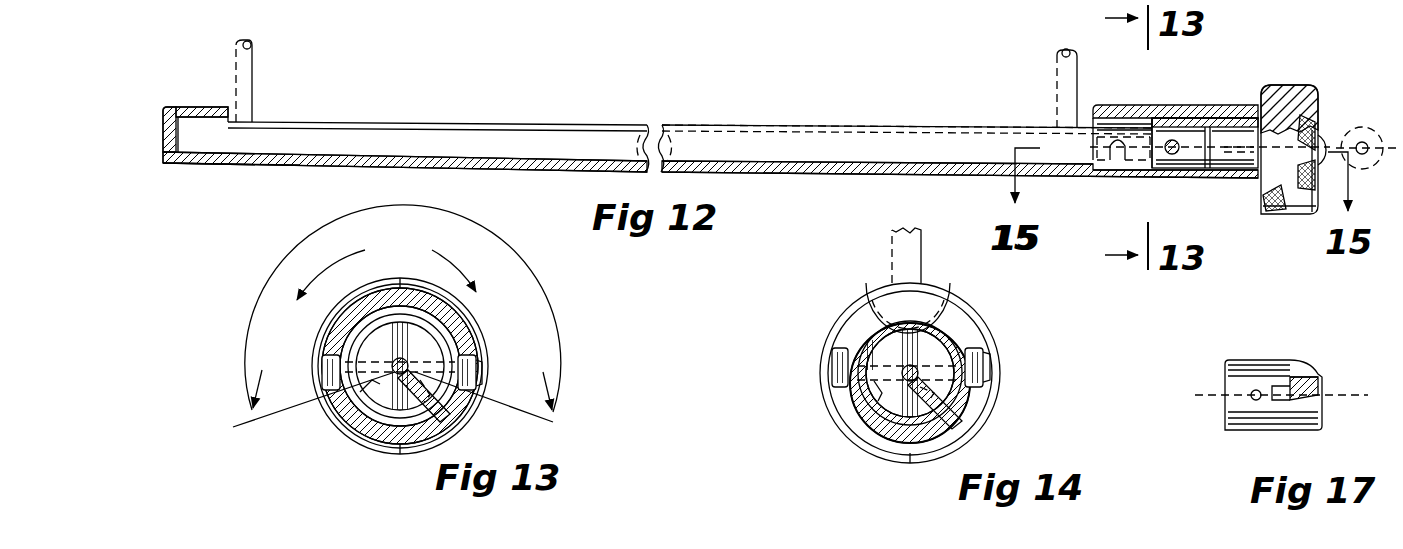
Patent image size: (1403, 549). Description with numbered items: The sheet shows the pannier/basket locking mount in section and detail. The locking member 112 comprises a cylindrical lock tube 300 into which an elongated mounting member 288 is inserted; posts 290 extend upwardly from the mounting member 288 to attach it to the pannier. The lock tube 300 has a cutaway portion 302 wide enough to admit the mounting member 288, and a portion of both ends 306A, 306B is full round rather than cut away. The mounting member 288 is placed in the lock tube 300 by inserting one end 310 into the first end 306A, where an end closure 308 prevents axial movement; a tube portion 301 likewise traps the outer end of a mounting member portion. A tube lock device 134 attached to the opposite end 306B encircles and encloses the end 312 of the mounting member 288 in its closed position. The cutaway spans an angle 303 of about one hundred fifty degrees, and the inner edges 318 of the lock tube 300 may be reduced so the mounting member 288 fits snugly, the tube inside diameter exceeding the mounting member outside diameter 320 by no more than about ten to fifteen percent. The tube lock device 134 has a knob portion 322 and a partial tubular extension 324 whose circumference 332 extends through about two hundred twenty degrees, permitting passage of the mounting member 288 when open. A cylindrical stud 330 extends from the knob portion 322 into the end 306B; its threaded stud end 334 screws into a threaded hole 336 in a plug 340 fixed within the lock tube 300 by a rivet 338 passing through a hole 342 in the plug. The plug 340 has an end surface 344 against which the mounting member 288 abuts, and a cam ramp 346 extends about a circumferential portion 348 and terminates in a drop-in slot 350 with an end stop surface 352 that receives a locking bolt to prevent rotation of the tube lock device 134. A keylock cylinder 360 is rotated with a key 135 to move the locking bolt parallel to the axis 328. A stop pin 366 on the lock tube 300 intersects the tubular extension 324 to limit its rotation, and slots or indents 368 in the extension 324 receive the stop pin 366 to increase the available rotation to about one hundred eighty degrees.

In FIG. 12, the locking member 112 is at (650, 100).
In FIG. 13, the locking member 112 is at (248, 296).
In FIG. 14, the locking member 112 is at (975, 298).
In FIG. 12, the tube lock device 134 is at (1280, 83).
In FIG. 13, the tube lock device 134 is at (502, 298).
In FIG. 14, the tube lock device 134 is at (836, 305).
In FIG. 12, the key 135 is at (1357, 126).
In FIG. 12, the mounting member 288 is at (548, 125).
In FIG. 14, the mounting member 288 is at (876, 286).
In FIG. 12, the posts 290 is at (253, 60).
In FIG. 14, the posts 290 is at (892, 241).
In FIG. 12, the lock tube 300 is at (584, 168).
In FIG. 13, the lock tube 300 is at (390, 402).
In FIG. 14, the lock tube 300 is at (886, 442).
In FIG. 12, the tube portion 301 is at (232, 106).
In FIG. 12, the cutaway portion 302 is at (232, 121).
In FIG. 13, the cutaway portion 302 is at (418, 316).
In FIG. 14, the cutaway portion 302 is at (936, 328).
In FIG. 13, the angle 303 is at (386, 271).
In FIG. 12, the first end 306A is at (182, 164).
In FIG. 12, the second end 306B is at (1228, 180).
In FIG. 12, the end closure 308 is at (168, 142).
In FIG. 12, the end of mounting member 310 is at (193, 117).
In FIG. 12, the end of mounting member 312 is at (1153, 162).
In FIG. 13, the inner edges 318 is at (445, 338).
In FIG. 14, the inner edges 318 is at (958, 346).
In FIG. 12, the mounting member outside diameter 320 is at (163, 152).
In FIG. 12, the knob portion 322 is at (1278, 215).
In FIG. 13, the knob portion 322 is at (400, 452).
In FIG. 14, the knob portion 322 is at (829, 322).
In FIG. 12, the partial tubular extension 324 is at (1116, 106).
In FIG. 13, the partial tubular extension 324 is at (457, 350).
In FIG. 14, the partial tubular extension 324 is at (862, 432).
In FIG. 12, the axis 328 is at (1402, 148).
In FIG. 17, the axis 328 is at (1200, 394).
In FIG. 12, the cylindrical stud 330 is at (1240, 165).
In FIG. 13, the circumference 332 is at (387, 316).
In FIG. 12, the threaded stud end 334 is at (1212, 140).
In FIG. 13, the threaded stud end 334 is at (393, 381).
In FIG. 14, the threaded stud end 334 is at (940, 432).
In FIG. 13, the threaded hole 336 is at (372, 396).
In FIG. 14, the threaded hole 336 is at (955, 412).
In FIG. 12, the rivet 338 is at (1173, 155).
In FIG. 13, the rivet 338 is at (447, 418).
In FIG. 14, the rivet 338 is at (855, 398).
In FIG. 12, the plug 340 is at (1174, 134).
In FIG. 13, the plug 340 is at (392, 396).
In FIG. 14, the plug 340 is at (914, 332).
In FIG. 17, the plug 340 is at (1242, 350).
In FIG. 13, the hole 342 is at (440, 427).
In FIG. 14, the hole 342 is at (960, 400).
In FIG. 17, the hole 342 is at (1253, 392).
In FIG. 17, the end surface 344 is at (1228, 418).
In FIG. 17, the cam ramp 346 is at (1312, 372).
In FIG. 17, the circumferential portion 348 is at (1275, 360).
In FIG. 17, the drop-in slot 350 is at (1278, 401).
In FIG. 17, the end stop surface 352 is at (1296, 406).
In FIG. 12, the keylock cylinder 360 is at (1323, 168).
In FIG. 13, the stop pin 366 is at (476, 367).
In FIG. 14, the stop pin 366 is at (985, 377).
In FIG. 12, the indents 368 is at (1116, 160).
In FIG. 13, the indents 368 is at (330, 376).
In FIG. 14, the indents 368 is at (977, 362).